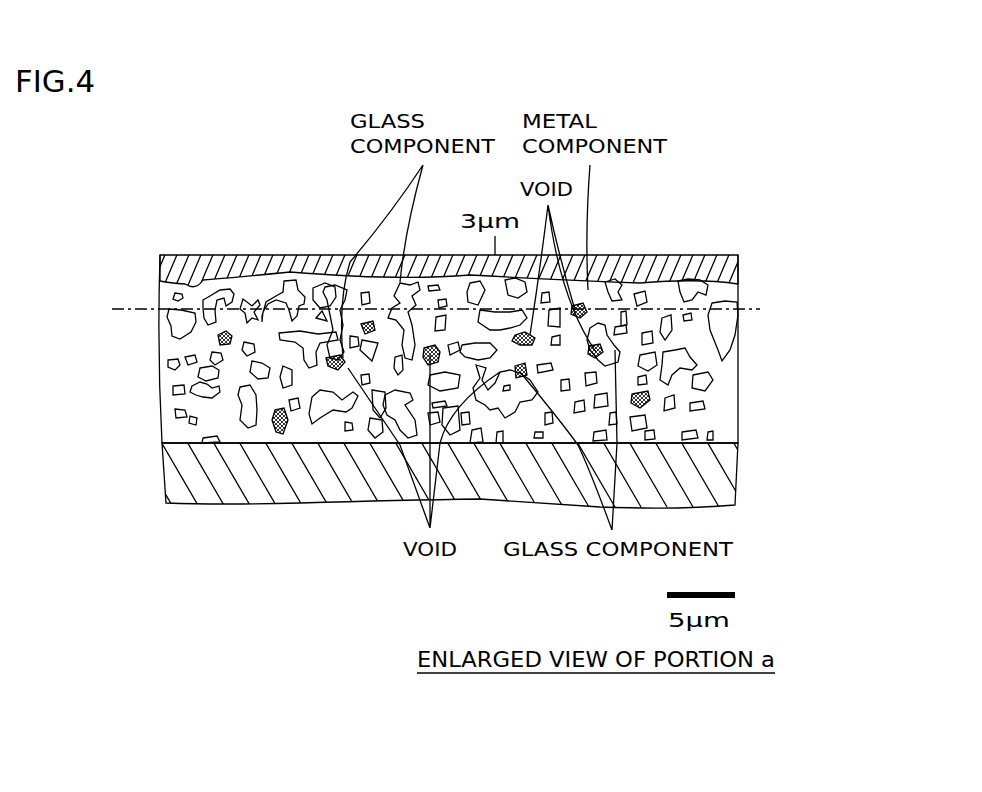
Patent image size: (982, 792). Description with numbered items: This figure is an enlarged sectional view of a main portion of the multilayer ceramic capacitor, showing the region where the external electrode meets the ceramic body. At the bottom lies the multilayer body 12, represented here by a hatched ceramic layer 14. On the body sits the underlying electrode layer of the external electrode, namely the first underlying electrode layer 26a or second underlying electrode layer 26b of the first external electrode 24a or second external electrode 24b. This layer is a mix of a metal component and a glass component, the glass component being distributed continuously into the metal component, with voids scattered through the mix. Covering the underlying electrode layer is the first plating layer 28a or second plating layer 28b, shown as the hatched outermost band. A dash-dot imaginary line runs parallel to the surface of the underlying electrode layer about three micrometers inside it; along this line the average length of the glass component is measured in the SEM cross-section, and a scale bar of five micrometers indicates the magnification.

The multilayer body 12 is at (708, 434).
The ceramic layer 14 is at (710, 463).
The first external electrode 24a is at (362, 178).
The second external electrode 24b is at (436, 312).
The first underlying electrode layer 26a is at (200, 280).
The second underlying electrode layer 26b is at (448, 349).
The first plating layer 28a is at (283, 280).
The second plating layer 28b is at (452, 270).